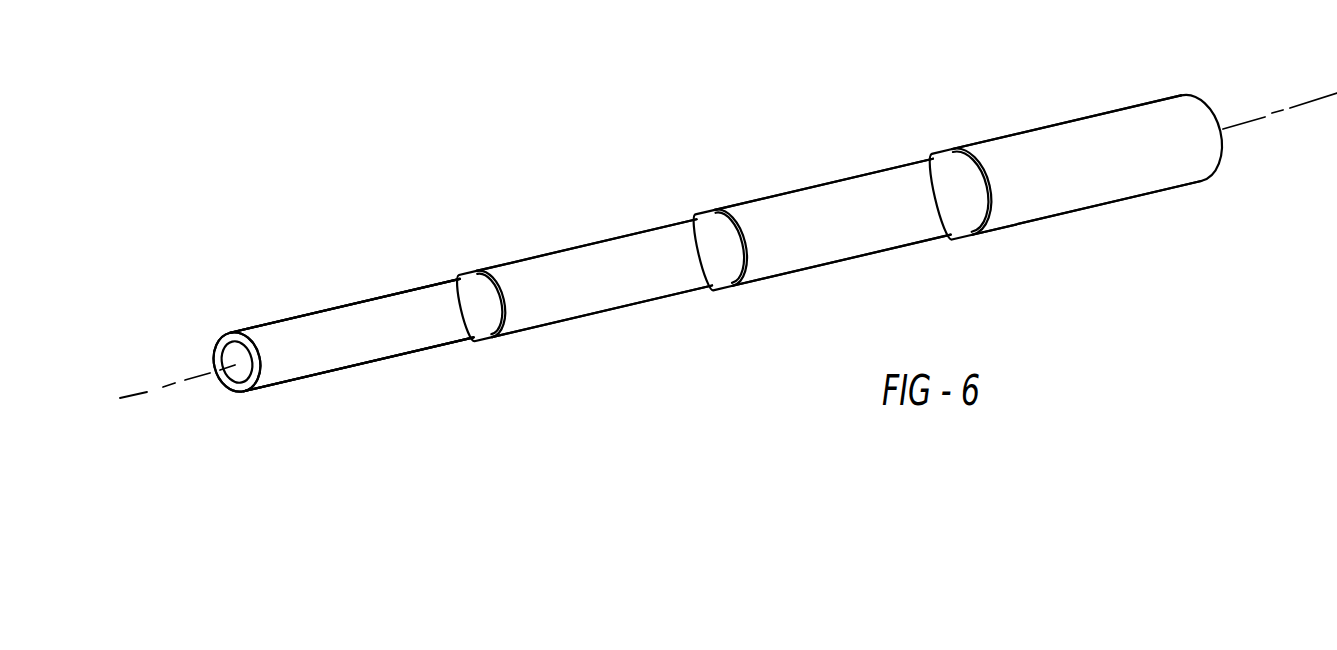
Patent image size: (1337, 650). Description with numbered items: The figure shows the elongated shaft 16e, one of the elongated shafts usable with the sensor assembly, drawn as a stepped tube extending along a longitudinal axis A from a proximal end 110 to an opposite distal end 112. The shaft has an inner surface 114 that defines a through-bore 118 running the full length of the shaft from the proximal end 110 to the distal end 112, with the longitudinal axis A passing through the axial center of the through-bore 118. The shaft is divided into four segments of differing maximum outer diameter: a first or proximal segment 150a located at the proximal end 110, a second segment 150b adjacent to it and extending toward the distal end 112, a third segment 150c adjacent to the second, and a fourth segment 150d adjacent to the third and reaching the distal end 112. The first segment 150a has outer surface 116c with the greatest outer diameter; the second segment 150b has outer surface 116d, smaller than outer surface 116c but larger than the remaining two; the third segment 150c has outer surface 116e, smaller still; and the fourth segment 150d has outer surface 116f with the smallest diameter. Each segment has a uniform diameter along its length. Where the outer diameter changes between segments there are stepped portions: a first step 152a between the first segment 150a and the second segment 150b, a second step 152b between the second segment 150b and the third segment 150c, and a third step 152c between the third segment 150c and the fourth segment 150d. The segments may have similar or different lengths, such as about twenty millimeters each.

The elongated shaft 16e is at (400, 175).
The proximal end 110 is at (1222, 158).
The distal end 112 is at (255, 375).
The inner surface 114 is at (230, 356).
The through-bore 118 is at (240, 375).
The longitudinal axis A is at (145, 394).
The outer surface of first segment 116c is at (1127, 202).
The outer surface of second segment 116d is at (827, 263).
The outer surface of third segment 116e is at (620, 312).
The outer surface of fourth segment 116f is at (400, 355).
The first segment 150a is at (1093, 137).
The second segment 150b is at (853, 193).
The third segment 150c is at (617, 237).
The fourth segment 150d is at (348, 322).
The first step 152a is at (985, 193).
The second step 152b is at (743, 262).
The third step 152c is at (500, 313).